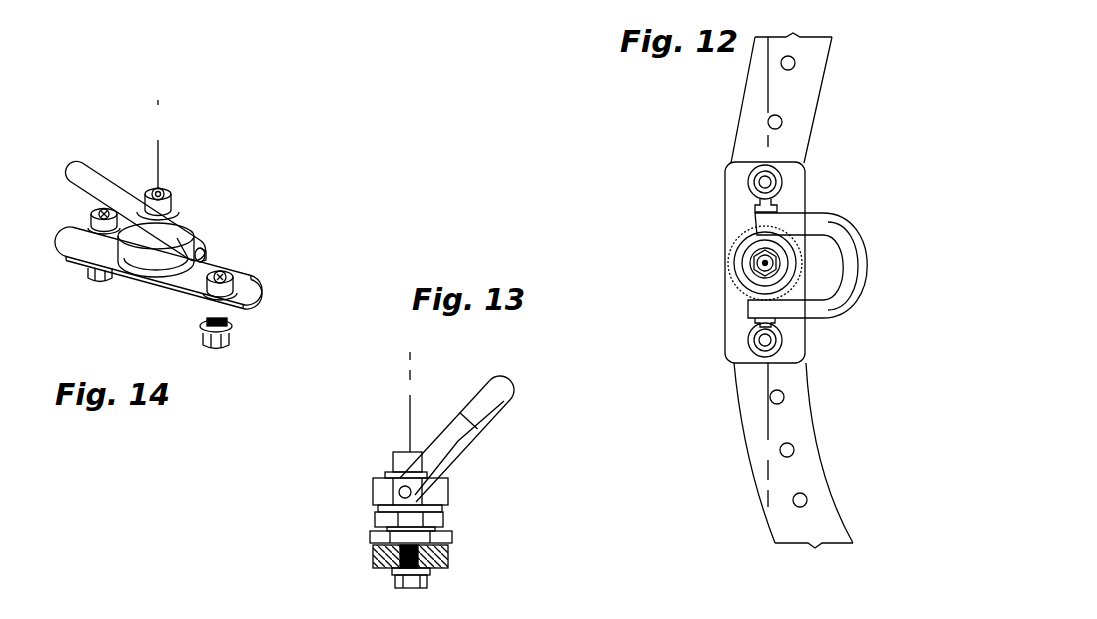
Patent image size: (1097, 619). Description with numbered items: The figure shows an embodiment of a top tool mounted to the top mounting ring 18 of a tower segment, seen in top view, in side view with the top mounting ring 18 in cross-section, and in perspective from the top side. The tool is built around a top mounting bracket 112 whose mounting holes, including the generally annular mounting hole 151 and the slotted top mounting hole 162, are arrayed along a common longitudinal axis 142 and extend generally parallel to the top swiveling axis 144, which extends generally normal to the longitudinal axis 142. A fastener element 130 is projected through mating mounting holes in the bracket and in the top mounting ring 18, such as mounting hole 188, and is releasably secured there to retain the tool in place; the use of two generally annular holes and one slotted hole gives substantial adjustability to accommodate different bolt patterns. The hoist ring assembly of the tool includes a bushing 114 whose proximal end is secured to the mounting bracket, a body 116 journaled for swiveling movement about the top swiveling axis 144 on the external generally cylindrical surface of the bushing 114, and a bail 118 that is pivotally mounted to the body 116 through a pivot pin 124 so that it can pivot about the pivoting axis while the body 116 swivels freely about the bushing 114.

In FIG. 12, the top mounting ring 18 is at (820, 88).
In FIG. 13, the top mounting ring 18 is at (448, 560).
In FIG. 12, the mounting hole 188 is at (795, 60).
In FIG. 12, the top mounting bracket 112 is at (806, 187).
In FIG. 13, the top mounting bracket 112 is at (452, 537).
In FIG. 14, the top mounting bracket 112 is at (221, 260).
In FIG. 12, the fastener element 130 is at (751, 188).
In FIG. 14, the fastener element 130 is at (236, 274).
In FIG. 12, the bail 118 is at (822, 215).
In FIG. 13, the bail 118 is at (507, 387).
In FIG. 14, the bail 118 is at (92, 164).
In FIG. 12, the top swiveling axis 144 is at (764, 262).
In FIG. 13, the top swiveling axis 144 is at (410, 410).
In FIG. 14, the top swiveling axis 144 is at (163, 162).
In FIG. 12, the bushing 114 is at (733, 284).
In FIG. 13, the bushing 114 is at (444, 518).
In FIG. 14, the bushing 114 is at (170, 274).
In FIG. 12, the longitudinal axis 142 is at (768, 423).
In FIG. 13, the body 116 is at (448, 492).
In FIG. 13, the pivot pin 124 is at (398, 492).
In FIG. 14, the pivot pin 124 is at (206, 249).
In FIG. 14, the mounting hole 151 is at (88, 268).
In FIG. 14, the slotted top mounting hole 162 is at (162, 273).